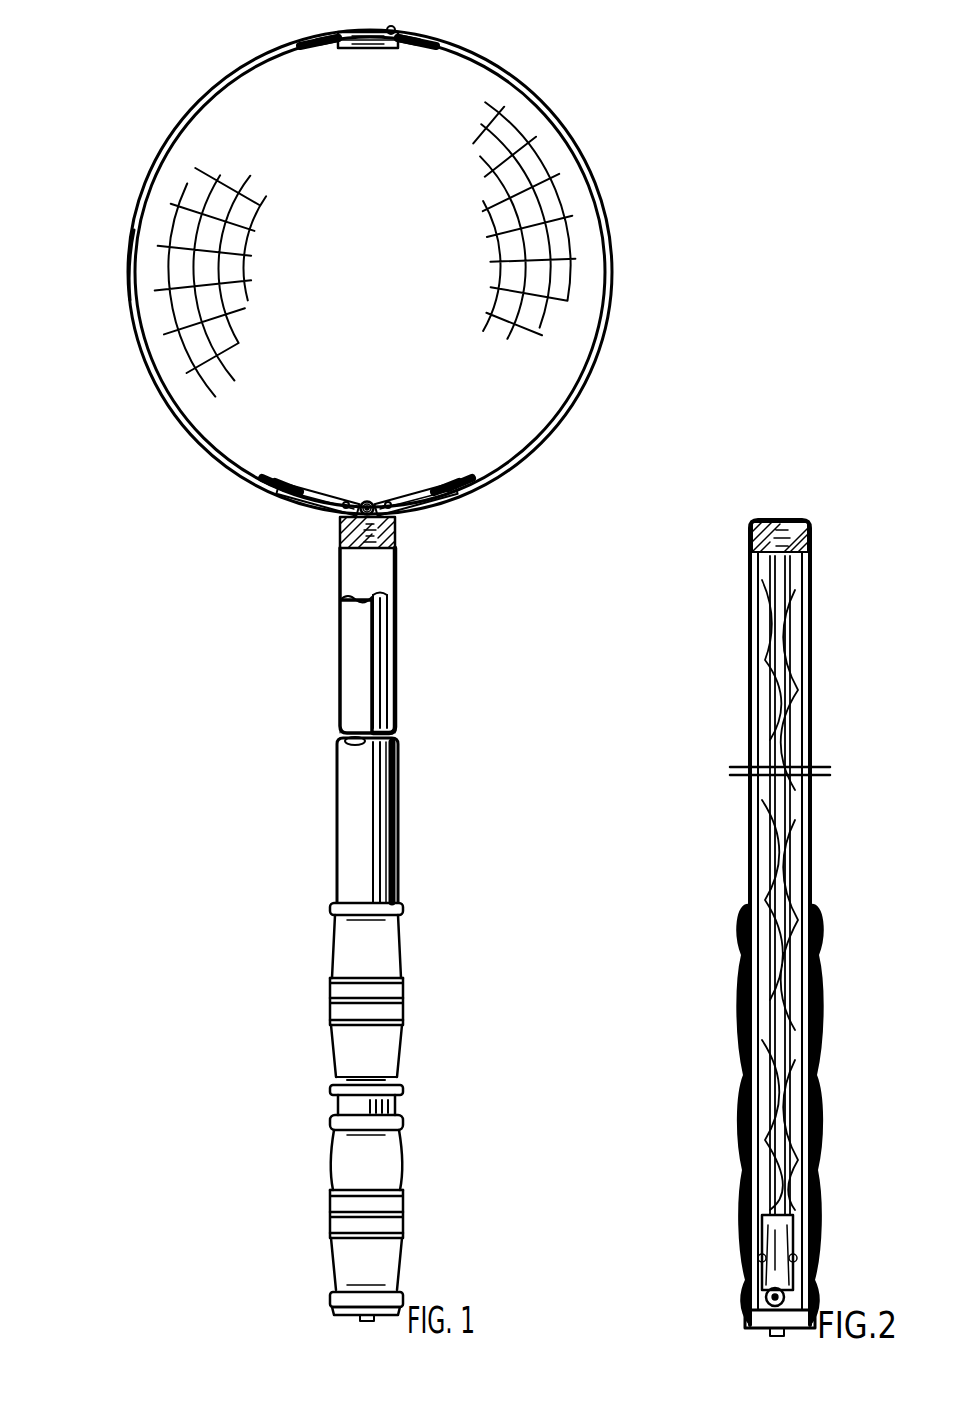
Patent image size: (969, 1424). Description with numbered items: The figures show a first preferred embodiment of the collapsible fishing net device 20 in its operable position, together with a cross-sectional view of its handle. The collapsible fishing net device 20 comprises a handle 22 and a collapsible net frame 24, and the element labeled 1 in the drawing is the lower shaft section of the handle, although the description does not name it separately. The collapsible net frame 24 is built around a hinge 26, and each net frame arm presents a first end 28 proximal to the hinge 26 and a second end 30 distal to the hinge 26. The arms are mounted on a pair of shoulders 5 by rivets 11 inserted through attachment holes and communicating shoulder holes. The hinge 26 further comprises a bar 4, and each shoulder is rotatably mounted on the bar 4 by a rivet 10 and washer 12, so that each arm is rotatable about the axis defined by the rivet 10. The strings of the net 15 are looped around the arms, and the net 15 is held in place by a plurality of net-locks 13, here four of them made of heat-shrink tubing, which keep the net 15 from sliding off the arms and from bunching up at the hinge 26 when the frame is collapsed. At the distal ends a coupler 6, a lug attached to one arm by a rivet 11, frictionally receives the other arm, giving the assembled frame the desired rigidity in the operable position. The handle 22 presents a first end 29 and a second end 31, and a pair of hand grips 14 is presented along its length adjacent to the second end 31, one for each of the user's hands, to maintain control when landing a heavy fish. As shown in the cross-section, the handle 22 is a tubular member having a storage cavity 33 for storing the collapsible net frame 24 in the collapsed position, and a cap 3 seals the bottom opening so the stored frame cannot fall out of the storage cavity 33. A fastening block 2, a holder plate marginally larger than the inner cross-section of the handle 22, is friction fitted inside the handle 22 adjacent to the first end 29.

In FIG. 1, the lower shaft section 1 is at (338, 832).
In FIG. 1, the fastening block 2 is at (345, 560).
In FIG. 1, the cap 3 is at (332, 1312).
In FIG. 1, the bar 4 is at (392, 578).
In FIG. 1, the shoulders 5 is at (305, 494).
In FIG. 1, the coupler 6 is at (376, 48).
In FIG. 1, the rivet 10 is at (362, 500).
In FIG. 1, the rivets 11 is at (392, 50).
In FIG. 1, the washer 12 is at (370, 498).
In FIG. 1, the net-locks 13 is at (330, 46).
In FIG. 1, the hand grips 14 is at (334, 1060).
In FIG. 1, the net 15 is at (145, 330).
In FIG. 1, the collapsible fishing net device 20 is at (153, 470).
In FIG. 1, the handle 22 is at (396, 545).
In FIG. 1, the collapsible net frame 24 is at (600, 150).
In FIG. 1, the hinge 26 is at (414, 436).
In FIG. 1, the first end 28 is at (262, 487).
In FIG. 1, the first end 29 is at (340, 538).
In FIG. 1, the second end 30 is at (320, 42).
In FIG. 1, the second end 31 is at (400, 1300).
In FIG. 2, the storage cavity 33 is at (812, 988).